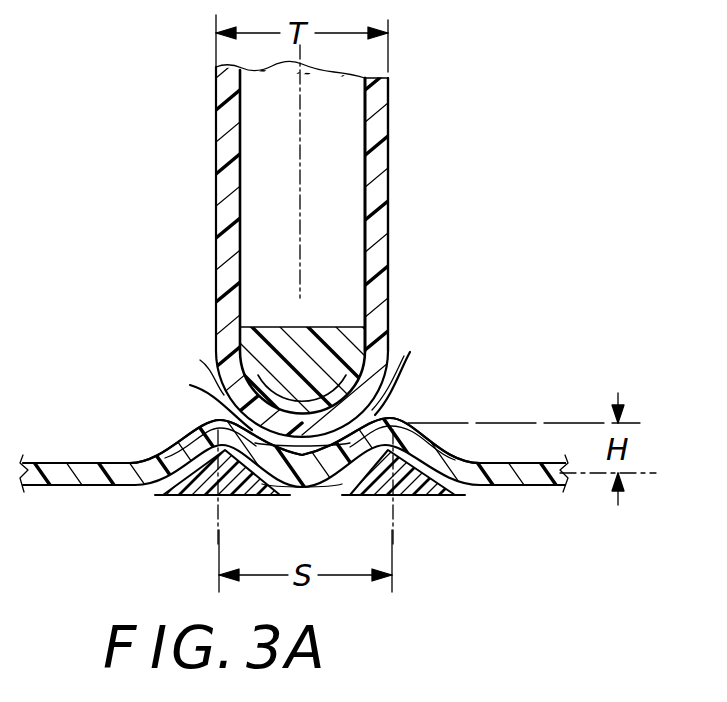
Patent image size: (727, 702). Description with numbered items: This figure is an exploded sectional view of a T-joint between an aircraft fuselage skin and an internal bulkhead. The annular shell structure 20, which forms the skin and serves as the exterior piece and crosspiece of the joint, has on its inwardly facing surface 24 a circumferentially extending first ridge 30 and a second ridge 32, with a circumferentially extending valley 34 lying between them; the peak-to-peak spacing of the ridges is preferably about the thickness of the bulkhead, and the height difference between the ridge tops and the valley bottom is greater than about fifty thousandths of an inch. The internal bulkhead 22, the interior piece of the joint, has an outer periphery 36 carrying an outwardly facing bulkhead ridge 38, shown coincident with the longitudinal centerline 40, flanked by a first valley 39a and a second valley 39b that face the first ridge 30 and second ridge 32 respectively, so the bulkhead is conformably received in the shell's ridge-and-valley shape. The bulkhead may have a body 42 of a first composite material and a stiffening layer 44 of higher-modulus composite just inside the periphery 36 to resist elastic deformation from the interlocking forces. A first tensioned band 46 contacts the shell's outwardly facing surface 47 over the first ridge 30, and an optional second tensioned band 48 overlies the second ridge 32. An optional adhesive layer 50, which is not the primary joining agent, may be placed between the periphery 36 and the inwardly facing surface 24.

The annular shell structure 20 is at (57, 463).
The internal bulkhead 22 is at (216, 84).
The inwardly facing surface 24 is at (542, 463).
The first ridge 30 is at (395, 420).
The second ridge 32 is at (215, 424).
The valley 34 is at (306, 452).
The outer periphery 36 is at (395, 385).
The bulkhead ridge 38 is at (237, 400).
The first valley 39a is at (404, 356).
The second valley 39b is at (208, 366).
The longitudinal centerline 40 is at (300, 240).
The body 42 is at (385, 118).
The stiffening layer 44 is at (328, 330).
The first tensioned band 46 is at (412, 492).
The outwardly facing surface 47 is at (436, 447).
The second tensioned band 48 is at (195, 497).
The adhesive layer 50 is at (305, 397).